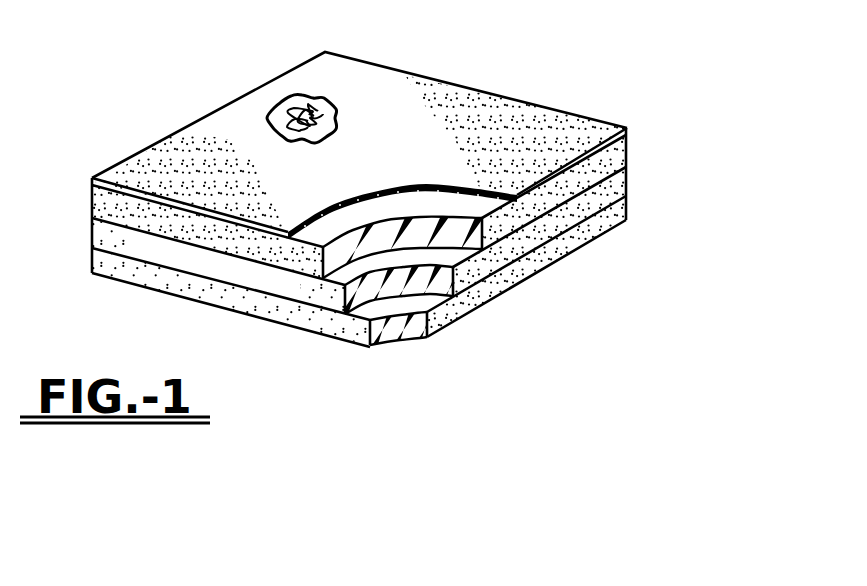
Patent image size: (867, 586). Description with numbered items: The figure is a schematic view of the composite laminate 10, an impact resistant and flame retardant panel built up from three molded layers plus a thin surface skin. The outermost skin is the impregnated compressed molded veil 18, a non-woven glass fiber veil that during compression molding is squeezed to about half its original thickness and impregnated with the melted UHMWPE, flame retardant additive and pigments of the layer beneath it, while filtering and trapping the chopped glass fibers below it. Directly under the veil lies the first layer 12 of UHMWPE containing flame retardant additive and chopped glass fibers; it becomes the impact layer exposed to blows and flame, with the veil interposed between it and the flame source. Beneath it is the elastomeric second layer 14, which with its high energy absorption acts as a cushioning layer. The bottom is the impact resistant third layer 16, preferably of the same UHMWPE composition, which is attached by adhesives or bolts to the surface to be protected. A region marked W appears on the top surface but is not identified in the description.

The composite laminate 10 is at (489, 75).
The impregnated compressed molded veil 18 is at (627, 128).
The first layer 12 is at (627, 153).
The second layer 14 is at (627, 182).
The third layer 16 is at (627, 217).
The wetting substance W is at (284, 110).